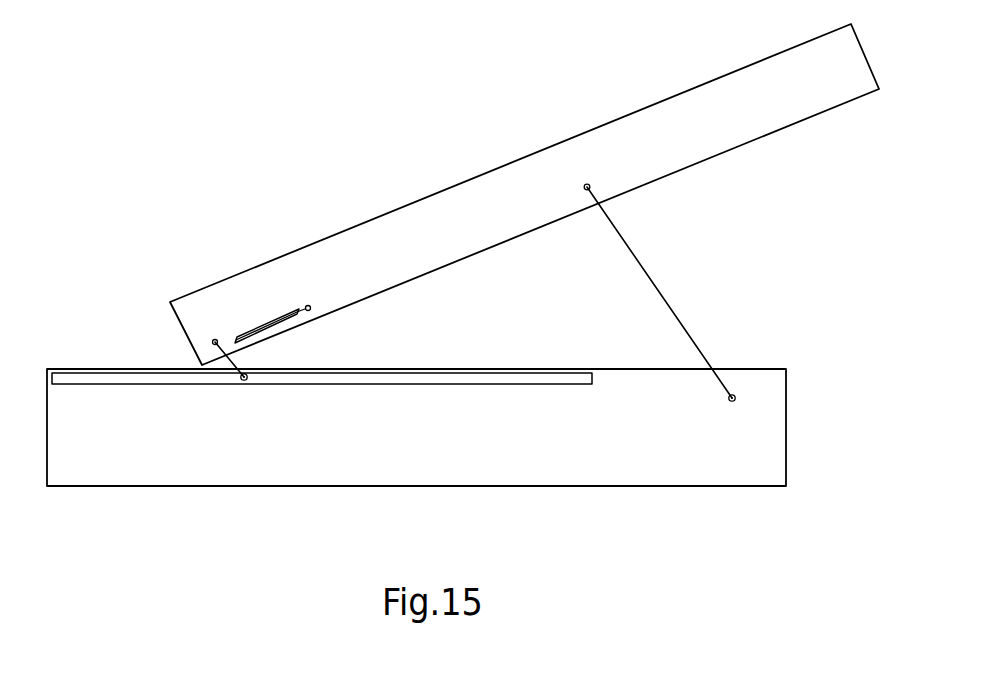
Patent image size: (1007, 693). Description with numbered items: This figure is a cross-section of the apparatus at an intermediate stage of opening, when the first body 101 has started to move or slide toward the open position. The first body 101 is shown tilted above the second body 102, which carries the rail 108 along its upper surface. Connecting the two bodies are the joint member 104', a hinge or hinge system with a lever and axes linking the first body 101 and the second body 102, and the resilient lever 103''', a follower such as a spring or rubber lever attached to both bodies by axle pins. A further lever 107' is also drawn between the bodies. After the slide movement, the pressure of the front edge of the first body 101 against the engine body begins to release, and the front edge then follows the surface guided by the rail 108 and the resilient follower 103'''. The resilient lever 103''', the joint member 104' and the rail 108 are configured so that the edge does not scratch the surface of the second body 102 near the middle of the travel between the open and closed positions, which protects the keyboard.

The first body 101 is at (771, 77).
The second body 102 is at (138, 468).
The resilient lever 103''' is at (261, 271).
The joint member 104' is at (701, 292).
The lever 107' is at (175, 325).
The rail 108 is at (367, 378).